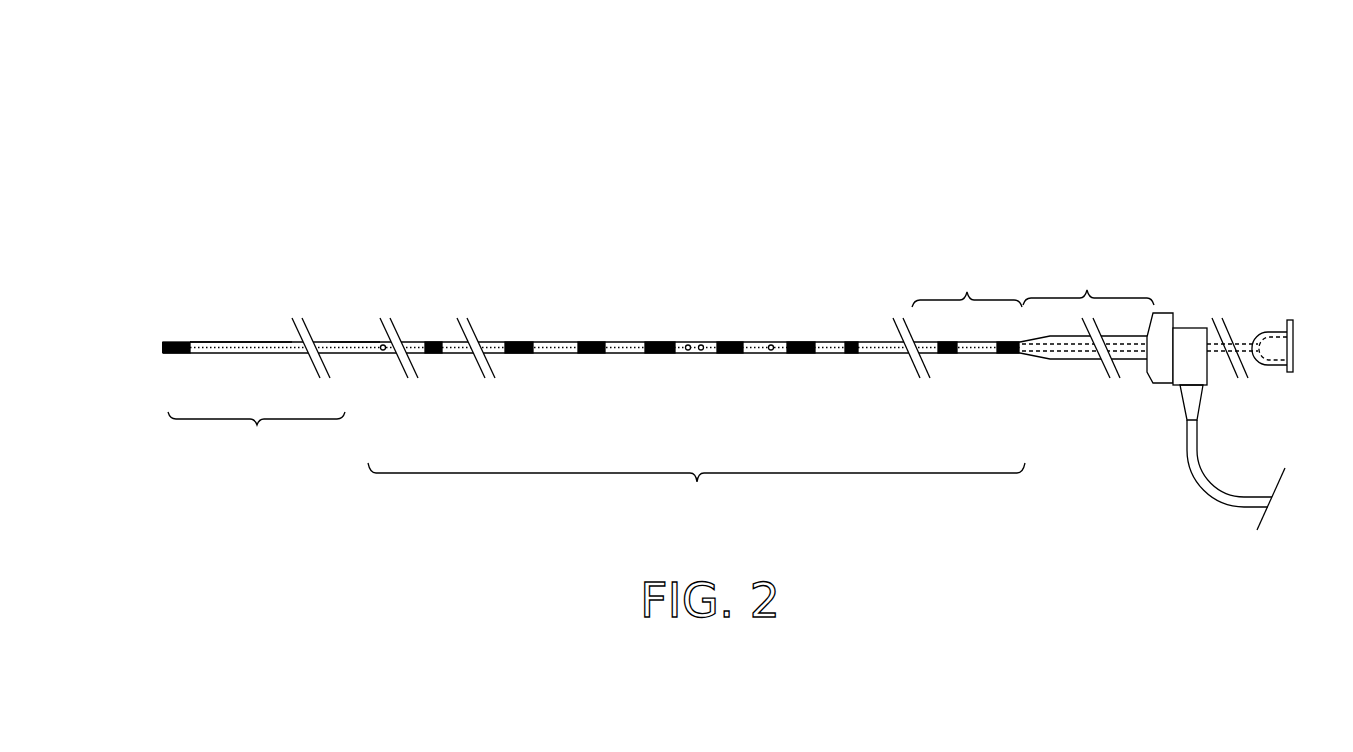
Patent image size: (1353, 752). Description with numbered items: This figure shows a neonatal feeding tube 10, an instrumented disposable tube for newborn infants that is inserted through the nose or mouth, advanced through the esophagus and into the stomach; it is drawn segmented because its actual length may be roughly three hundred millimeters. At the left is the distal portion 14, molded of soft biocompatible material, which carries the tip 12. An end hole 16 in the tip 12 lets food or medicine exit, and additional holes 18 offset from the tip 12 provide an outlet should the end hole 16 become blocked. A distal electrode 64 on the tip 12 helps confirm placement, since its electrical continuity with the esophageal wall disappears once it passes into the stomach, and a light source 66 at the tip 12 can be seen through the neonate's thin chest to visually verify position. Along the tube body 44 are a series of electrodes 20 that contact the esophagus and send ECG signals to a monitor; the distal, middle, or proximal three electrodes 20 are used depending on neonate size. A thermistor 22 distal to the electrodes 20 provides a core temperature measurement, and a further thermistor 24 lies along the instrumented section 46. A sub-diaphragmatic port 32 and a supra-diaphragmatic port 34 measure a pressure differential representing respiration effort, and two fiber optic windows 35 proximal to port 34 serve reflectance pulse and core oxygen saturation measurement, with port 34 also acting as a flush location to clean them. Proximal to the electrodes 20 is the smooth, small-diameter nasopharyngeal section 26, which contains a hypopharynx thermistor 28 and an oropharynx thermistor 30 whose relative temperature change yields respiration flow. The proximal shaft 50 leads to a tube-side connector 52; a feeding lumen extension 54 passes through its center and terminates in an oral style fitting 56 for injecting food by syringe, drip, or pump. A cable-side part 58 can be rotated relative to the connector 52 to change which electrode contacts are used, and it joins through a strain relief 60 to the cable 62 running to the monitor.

The neonatal feeding tube 10 is at (204, 142).
The tip 12 is at (163, 347).
The distal portion 14 is at (256, 433).
The end hole 16 is at (162, 350).
The additional holes 18 is at (228, 341).
The electrodes 20 is at (520, 341).
The thermistor 22 is at (430, 341).
The thermistor 24 is at (851, 354).
The nasopharyngeal section 26 is at (967, 284).
The hypopharynx thermistor 28 is at (947, 354).
The oropharynx thermistor 30 is at (1008, 354).
The sub-diaphragmatic port 32 is at (383, 354).
The supra-diaphragmatic port 34 is at (771, 354).
The fiber optic windows 35 is at (701, 354).
The catheter body 44 is at (350, 333).
The working section 46 is at (696, 486).
The proximal shaft 50 is at (1087, 319).
The tube-side connector 52 is at (1160, 313).
The feeding lumen extension 54 is at (1243, 338).
The oral style fitting 56 is at (1290, 373).
The cable-side part 58 is at (1190, 328).
The strain relief 60 is at (1182, 404).
The cable 62 is at (1187, 465).
The distal electrode 64 is at (175, 341).
The light source 66 is at (166, 354).